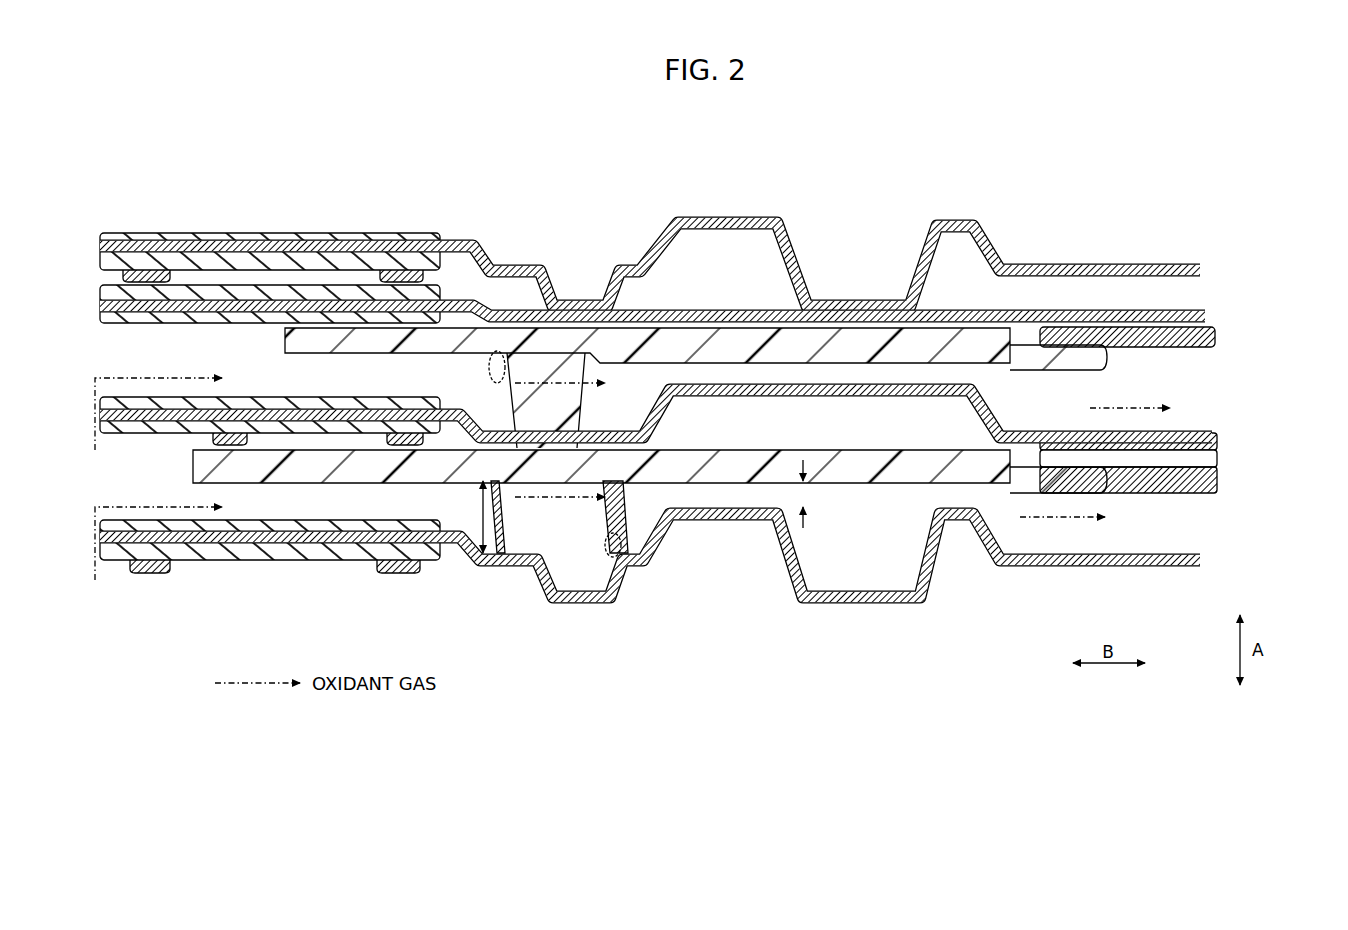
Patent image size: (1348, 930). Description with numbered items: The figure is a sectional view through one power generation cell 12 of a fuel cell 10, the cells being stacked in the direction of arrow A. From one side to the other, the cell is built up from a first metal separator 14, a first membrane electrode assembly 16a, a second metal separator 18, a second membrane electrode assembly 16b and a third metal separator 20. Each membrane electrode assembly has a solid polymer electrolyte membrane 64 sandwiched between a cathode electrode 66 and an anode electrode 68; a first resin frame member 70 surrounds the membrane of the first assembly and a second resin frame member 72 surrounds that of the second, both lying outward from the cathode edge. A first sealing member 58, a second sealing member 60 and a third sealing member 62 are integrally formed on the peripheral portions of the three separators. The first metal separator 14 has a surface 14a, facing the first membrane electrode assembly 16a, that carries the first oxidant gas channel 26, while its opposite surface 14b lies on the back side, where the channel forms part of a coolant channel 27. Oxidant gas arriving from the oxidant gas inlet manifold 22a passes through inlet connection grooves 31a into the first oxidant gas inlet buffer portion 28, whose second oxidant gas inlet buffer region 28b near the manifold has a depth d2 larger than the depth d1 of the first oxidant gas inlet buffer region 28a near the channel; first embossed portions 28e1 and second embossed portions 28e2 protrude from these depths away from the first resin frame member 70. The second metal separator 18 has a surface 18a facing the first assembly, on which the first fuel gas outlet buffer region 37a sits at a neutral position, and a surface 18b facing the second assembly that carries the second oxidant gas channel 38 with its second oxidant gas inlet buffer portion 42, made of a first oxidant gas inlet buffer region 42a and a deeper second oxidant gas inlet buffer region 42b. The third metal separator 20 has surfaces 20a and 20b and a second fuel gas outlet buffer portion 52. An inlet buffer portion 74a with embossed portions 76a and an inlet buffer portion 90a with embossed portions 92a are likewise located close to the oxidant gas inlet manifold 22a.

The fuel cell 10 is at (321, 175).
The power generation cell 12 is at (1303, 255).
The first metal separator 14 is at (1207, 270).
The surface of the first metal separator 14a is at (1185, 553).
The surface of the first metal separator 14b is at (1155, 568).
The first membrane electrode assembly 16a is at (741, 462).
The second membrane electrode assembly 16b is at (1208, 368).
The second metal separator 18 is at (1200, 430).
The surface of the second metal separator 18a is at (1073, 431).
The surface of the second metal separator 18b is at (1140, 482).
The third metal separator 20 is at (700, 293).
The surface of the third metal separator 20a is at (1157, 350).
The surface of the third metal separator 20b is at (1173, 308).
The oxidant gas inlet manifold 22a is at (76, 537).
The first oxidant gas channel 26 is at (1055, 545).
The coolant channel 27 is at (1058, 288).
The first oxidant gas inlet buffer portion 28 is at (698, 589).
The first oxidant gas inlet buffer region 28a is at (738, 522).
The second oxidant gas inlet buffer region 28b is at (636, 580).
The first embossed portions 28e1 is at (870, 603).
The second embossed portions 28e2 is at (572, 603).
The inlet connection grooves 31a is at (282, 514).
The first fuel gas outlet buffer region 37a is at (828, 300).
The second oxidant gas channel 38 is at (1126, 383).
The second oxidant gas inlet buffer portion 42 is at (668, 301).
The first oxidant gas inlet buffer region 42a is at (703, 327).
The second oxidant gas inlet buffer region 42b is at (630, 483).
The second fuel gas outlet buffer portion 52 is at (768, 217).
The first sealing member 58 is at (217, 562).
The second sealing member 60 is at (139, 434).
The third sealing member 62 is at (100, 303).
The solid polymer electrolyte membrane 64 is at (1218, 461).
The cathode electrode 66 is at (1147, 484).
The anode electrode 68 is at (1218, 441).
The first resin frame member 70 is at (950, 510).
The second resin frame member 72 is at (577, 324).
The inlet buffer portion 74a is at (596, 452).
The embossed portions 76a is at (489, 560).
The inlet buffer portion 90a is at (616, 558).
The embossed portions 92a is at (497, 350).
The depth d1 is at (800, 517).
The depth d2 is at (481, 521).